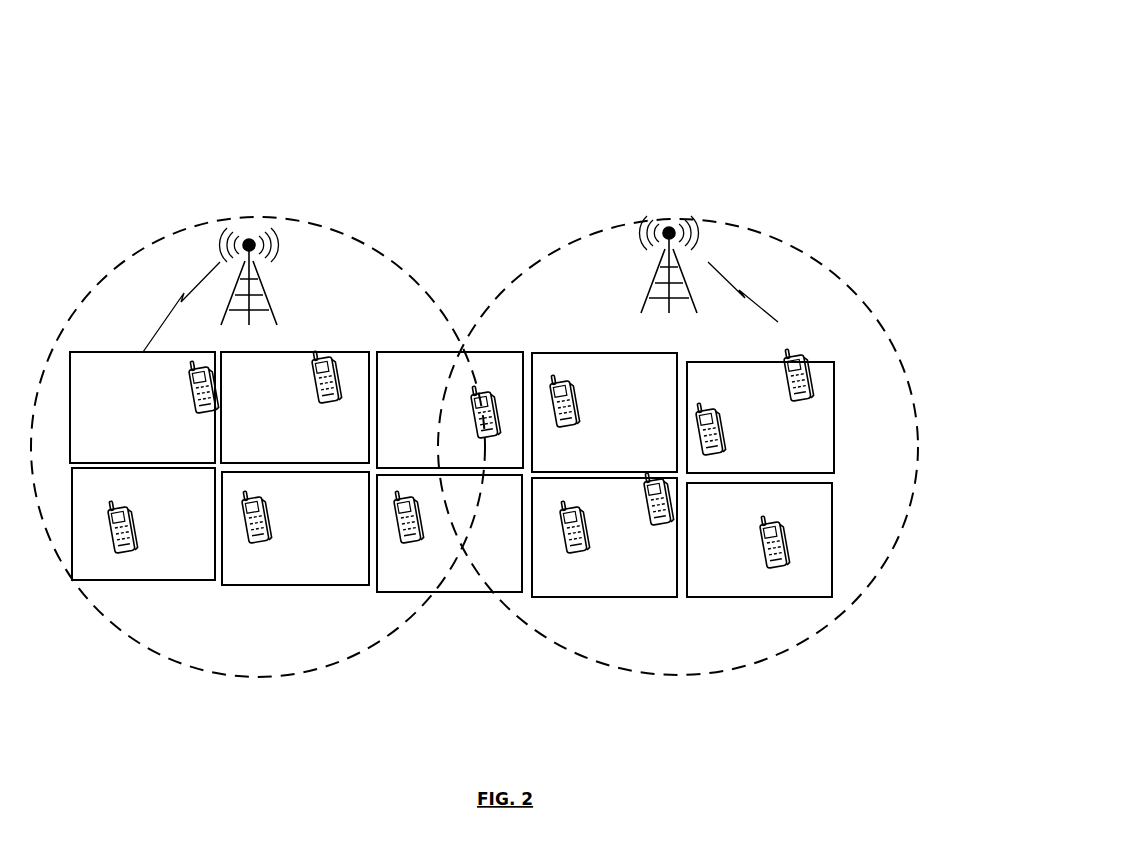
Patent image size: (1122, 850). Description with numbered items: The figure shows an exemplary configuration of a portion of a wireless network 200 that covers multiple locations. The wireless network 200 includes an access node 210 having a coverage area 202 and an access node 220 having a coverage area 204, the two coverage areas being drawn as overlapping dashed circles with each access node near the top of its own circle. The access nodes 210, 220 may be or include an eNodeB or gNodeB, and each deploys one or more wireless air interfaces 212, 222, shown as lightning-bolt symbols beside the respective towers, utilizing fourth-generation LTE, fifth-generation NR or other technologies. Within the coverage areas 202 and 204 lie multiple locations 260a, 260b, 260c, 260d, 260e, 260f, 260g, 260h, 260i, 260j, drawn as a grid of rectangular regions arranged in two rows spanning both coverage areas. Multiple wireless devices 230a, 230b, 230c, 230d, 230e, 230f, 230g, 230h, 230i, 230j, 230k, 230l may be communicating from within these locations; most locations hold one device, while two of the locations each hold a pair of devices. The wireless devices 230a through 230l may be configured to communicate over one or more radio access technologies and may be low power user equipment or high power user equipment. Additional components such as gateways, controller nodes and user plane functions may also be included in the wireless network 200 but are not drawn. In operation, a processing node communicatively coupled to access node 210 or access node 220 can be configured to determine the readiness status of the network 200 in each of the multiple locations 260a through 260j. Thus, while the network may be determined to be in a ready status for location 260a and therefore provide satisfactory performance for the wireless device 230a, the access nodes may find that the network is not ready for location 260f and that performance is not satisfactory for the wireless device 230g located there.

The wireless network 200 is at (708, 60).
The coverage area 202 is at (118, 254).
The coverage area 204 is at (720, 212).
The access node 210 is at (247, 225).
The wireless air interface 212 is at (163, 307).
The access node 220 is at (625, 278).
The wireless air interface 222 is at (760, 292).
The wireless device 230a is at (208, 414).
The wireless device 230b is at (317, 402).
The wireless device 230c is at (477, 384).
The wireless device 230d is at (578, 395).
The wireless device 230e is at (706, 402).
The wireless device 230f is at (794, 402).
The wireless device 230g is at (137, 528).
The wireless device 230h is at (270, 516).
The wireless device 230i is at (425, 520).
The wireless device 230j is at (577, 504).
The wireless device 230k is at (662, 530).
The wireless device 230l is at (766, 518).
The location 260a is at (142, 407).
The location 260b is at (295, 407).
The location 260c is at (450, 410).
The location 260d is at (604, 412).
The location 260e is at (760, 417).
The location 260f is at (143, 524).
The location 260g is at (295, 528).
The location 260h is at (449, 533).
The location 260i is at (604, 537).
The location 260j is at (759, 540).